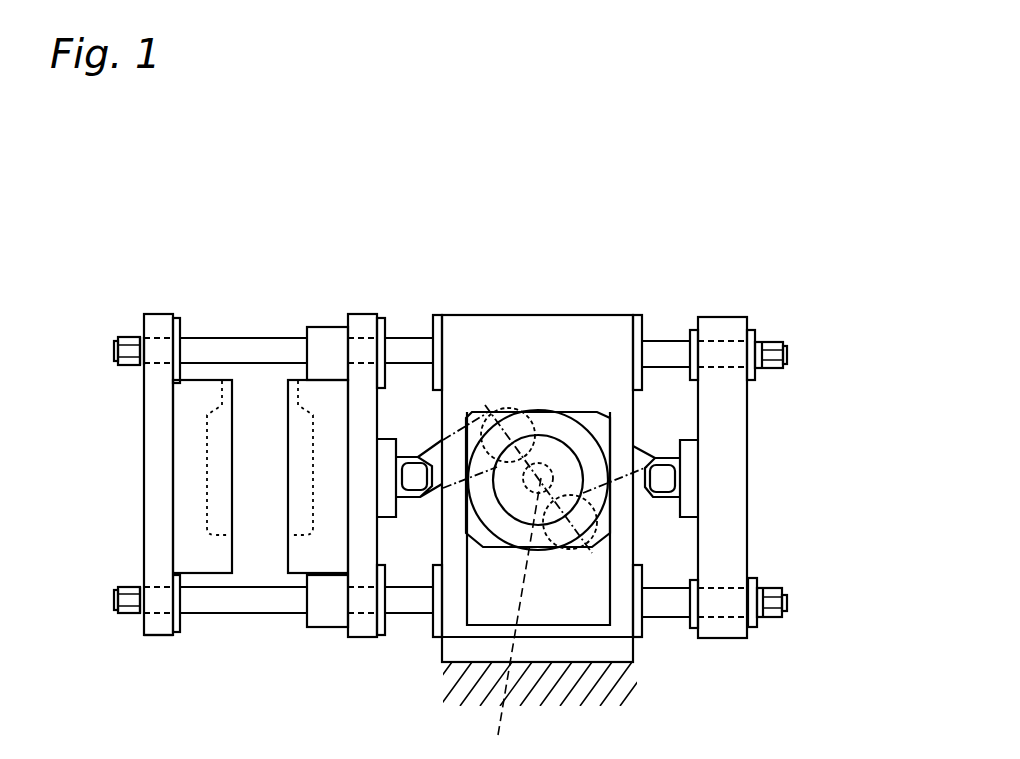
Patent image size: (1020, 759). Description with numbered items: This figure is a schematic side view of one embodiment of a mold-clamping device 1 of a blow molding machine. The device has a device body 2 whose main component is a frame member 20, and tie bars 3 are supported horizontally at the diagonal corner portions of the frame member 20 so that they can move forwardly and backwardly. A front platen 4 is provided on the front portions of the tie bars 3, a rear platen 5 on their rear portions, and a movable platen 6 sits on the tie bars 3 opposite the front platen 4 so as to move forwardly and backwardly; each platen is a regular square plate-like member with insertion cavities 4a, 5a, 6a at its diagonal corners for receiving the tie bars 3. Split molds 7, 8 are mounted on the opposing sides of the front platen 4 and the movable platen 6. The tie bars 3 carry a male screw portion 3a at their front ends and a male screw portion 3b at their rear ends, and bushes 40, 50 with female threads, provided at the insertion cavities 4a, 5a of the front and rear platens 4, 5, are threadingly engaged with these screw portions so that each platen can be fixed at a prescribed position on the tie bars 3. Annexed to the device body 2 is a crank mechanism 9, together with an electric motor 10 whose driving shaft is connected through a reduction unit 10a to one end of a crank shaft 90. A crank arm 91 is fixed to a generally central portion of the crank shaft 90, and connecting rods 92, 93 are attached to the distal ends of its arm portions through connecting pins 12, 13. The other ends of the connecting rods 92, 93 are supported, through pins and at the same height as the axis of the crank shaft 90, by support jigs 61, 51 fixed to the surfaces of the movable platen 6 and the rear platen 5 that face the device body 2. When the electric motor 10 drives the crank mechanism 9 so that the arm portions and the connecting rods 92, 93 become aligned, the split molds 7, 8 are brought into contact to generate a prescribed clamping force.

The mold-clamping device 1 is at (475, 212).
The device body 2 is at (613, 327).
The tie bars 3 is at (207, 336).
The male screw portion 3a is at (117, 342).
The male screw portion 3b is at (787, 353).
The front platen 4 is at (150, 315).
The insertion cavity 4a is at (133, 637).
The bush 40 is at (173, 367).
The rear platen 5 is at (733, 470).
The insertion cavity 5a is at (733, 640).
The bush 50 is at (757, 375).
The support jig 51 is at (687, 472).
The movable platen 6 is at (365, 643).
The insertion cavity 6a is at (370, 340).
The support jig 61 is at (387, 436).
The split mold 7 is at (207, 578).
The split mold 8 is at (300, 577).
The crank mechanism 9 is at (497, 739).
The electric motor 10 is at (780, 345).
The reduction unit 10a is at (577, 447).
The connecting pin 12 is at (513, 425).
The connecting pin 13 is at (632, 515).
The frame member 20 is at (618, 628).
The crank shaft 90 is at (536, 497).
The crank arm 91 is at (568, 545).
The connecting rod 92 is at (458, 432).
The connecting rod 93 is at (622, 505).